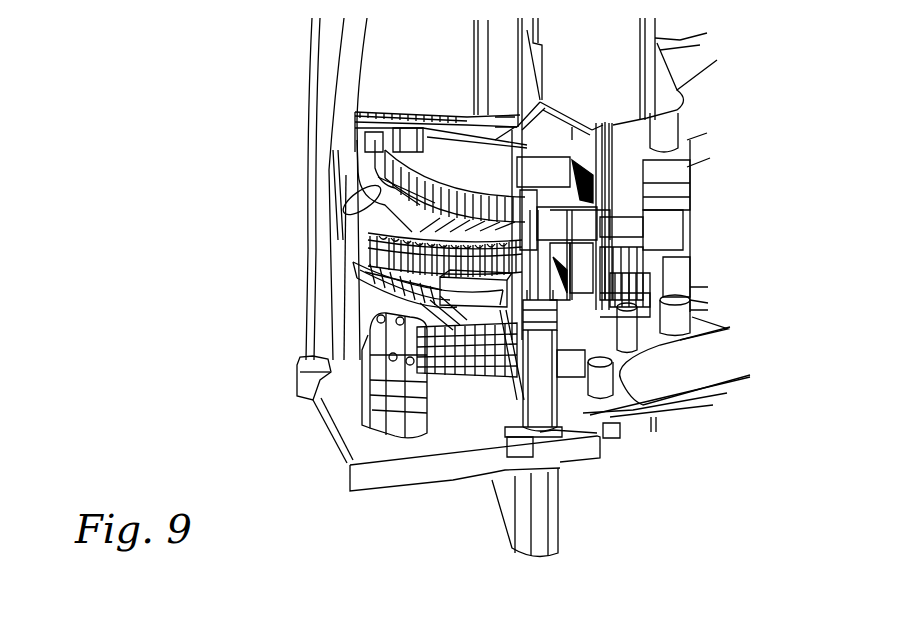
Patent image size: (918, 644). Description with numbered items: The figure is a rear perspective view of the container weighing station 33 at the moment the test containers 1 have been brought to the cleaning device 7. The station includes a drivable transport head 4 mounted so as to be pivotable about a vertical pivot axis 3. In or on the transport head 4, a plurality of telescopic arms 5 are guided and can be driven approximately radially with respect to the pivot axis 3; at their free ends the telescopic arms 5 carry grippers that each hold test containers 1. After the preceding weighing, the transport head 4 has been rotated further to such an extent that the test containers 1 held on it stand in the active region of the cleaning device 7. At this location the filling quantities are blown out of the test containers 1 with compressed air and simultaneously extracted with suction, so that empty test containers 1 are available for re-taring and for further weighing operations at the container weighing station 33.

The test container 1 is at (457, 290).
The vertical pivot axis 3 is at (487, 56).
The transport head 4 is at (480, 207).
The telescopic arm 5 is at (447, 186).
The cleaning device 7 is at (366, 200).
The container weighing station 33 is at (558, 103).